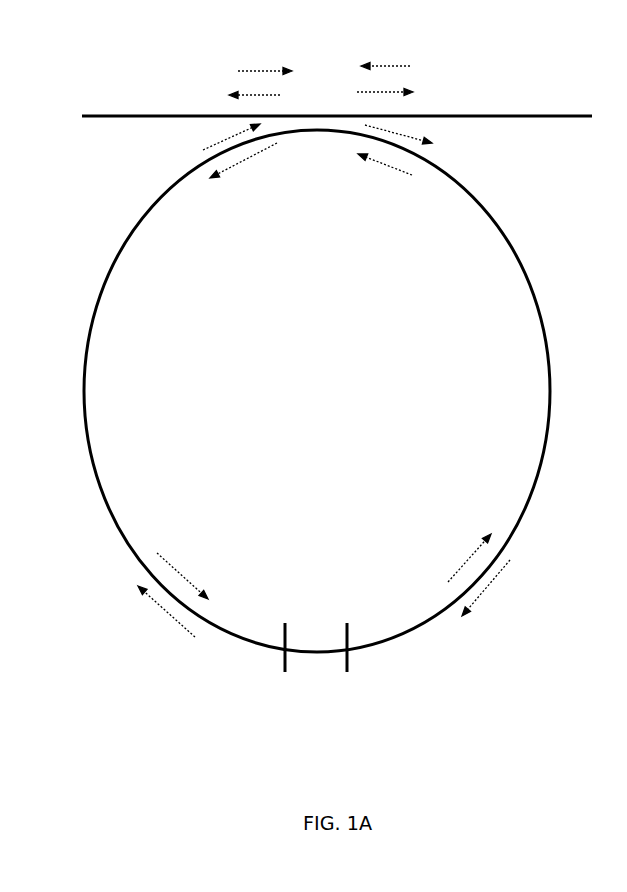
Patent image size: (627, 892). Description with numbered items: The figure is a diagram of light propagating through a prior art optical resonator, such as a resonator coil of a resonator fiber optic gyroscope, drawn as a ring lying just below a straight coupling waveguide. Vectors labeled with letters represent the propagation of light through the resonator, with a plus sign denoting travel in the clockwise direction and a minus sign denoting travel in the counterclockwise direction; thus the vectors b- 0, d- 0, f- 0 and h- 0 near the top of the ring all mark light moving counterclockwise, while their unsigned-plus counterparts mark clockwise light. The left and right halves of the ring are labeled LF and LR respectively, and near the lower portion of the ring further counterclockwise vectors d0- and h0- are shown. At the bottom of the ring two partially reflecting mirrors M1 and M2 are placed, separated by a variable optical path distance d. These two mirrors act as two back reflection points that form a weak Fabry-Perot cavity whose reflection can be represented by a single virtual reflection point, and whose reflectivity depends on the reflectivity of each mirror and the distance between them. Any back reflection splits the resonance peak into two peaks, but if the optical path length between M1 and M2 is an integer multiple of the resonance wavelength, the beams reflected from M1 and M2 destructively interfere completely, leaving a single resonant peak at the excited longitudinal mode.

The forward ring path length LF is at (182, 391).
The reverse ring path length LR is at (459, 391).
The partially reflecting mirror M1 is at (283, 631).
The partially reflecting mirror M2 is at (346, 631).
The variable optical path distance d is at (316, 671).
The light propagation vector b- is at (244, 96).
The light propagation vector d- is at (243, 176).
The light propagation vector f- is at (402, 58).
The light propagation vector h- is at (403, 181).
The ring backward wave at mirror d0- is at (182, 564).
The ring backward wave at mirror h0- is at (468, 551).